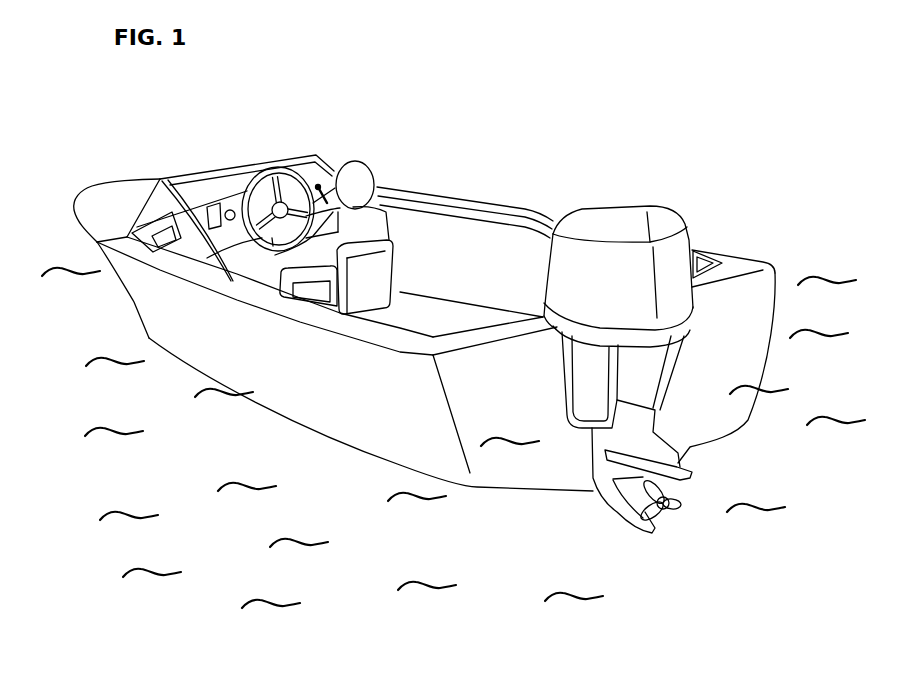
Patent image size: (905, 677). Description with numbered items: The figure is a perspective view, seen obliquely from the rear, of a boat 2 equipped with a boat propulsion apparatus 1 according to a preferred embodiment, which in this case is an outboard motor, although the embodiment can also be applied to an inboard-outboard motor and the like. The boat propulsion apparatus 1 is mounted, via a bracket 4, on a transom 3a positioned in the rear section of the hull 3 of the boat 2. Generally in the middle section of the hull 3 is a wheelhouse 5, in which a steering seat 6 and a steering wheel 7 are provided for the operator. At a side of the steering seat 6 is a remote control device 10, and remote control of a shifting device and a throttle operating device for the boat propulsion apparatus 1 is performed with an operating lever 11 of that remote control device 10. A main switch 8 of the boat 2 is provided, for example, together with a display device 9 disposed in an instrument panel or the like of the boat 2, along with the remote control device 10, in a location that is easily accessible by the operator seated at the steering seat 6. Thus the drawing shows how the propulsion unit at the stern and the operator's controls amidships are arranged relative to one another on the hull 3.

The boat propulsion apparatus 1 is at (613, 195).
The boat 2 is at (414, 131).
The hull 3 is at (538, 199).
The transom 3a is at (730, 297).
The bracket 4 is at (547, 360).
The wheelhouse 5 is at (420, 312).
The steering seat 6 is at (359, 291).
The steering wheel 7 is at (207, 258).
The main switch 8 is at (232, 209).
The display device 9 is at (171, 233).
The remote control device 10 is at (328, 175).
The operating lever 11 is at (318, 186).